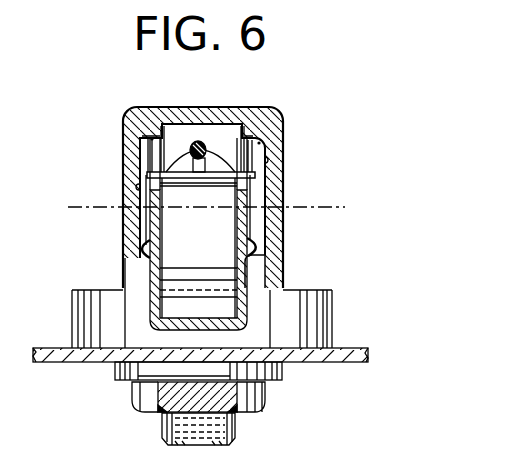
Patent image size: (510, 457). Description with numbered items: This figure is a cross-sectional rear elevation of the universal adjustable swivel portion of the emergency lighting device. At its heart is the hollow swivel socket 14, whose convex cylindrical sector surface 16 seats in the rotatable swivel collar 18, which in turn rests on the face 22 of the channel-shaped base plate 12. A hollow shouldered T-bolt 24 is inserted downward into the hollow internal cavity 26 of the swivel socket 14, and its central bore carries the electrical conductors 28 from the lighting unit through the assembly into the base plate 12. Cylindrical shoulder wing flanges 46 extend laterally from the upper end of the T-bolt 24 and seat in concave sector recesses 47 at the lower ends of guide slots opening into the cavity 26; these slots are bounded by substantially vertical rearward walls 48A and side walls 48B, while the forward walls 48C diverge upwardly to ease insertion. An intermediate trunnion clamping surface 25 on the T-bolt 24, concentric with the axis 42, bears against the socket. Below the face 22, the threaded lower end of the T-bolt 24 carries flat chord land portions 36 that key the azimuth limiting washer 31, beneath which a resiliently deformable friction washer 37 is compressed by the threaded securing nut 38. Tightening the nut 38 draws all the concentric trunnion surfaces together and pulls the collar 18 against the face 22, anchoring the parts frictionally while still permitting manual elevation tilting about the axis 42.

The channel-shaped base plate 12 is at (56, 344).
The hollow swivel socket 14 is at (139, 101).
The convex cylindrical sector surface 16 is at (260, 272).
The rotatable swivel collar 18 is at (320, 288).
The face of base plate 22 is at (345, 348).
The hollow shouldered T-bolt 24 is at (235, 432).
The intermediate trunnion clamping surface 25 is at (211, 240).
The hollow internal cavity 26 is at (172, 130).
The electrical conductors 28 is at (199, 141).
The azimuth limiting washer 31 is at (113, 368).
The flat chord land portions 36 is at (180, 434).
The resiliently deformable friction washer 37 is at (119, 382).
The threaded securing nut 38 is at (253, 397).
The axis 42 is at (325, 207).
The cylindrical shoulder wing flanges 46 is at (155, 162).
The concave sector recesses 47 is at (142, 219).
The rearward walls 48A is at (142, 247).
The side walls 48B is at (139, 187).
The forward walls 48C is at (152, 139).